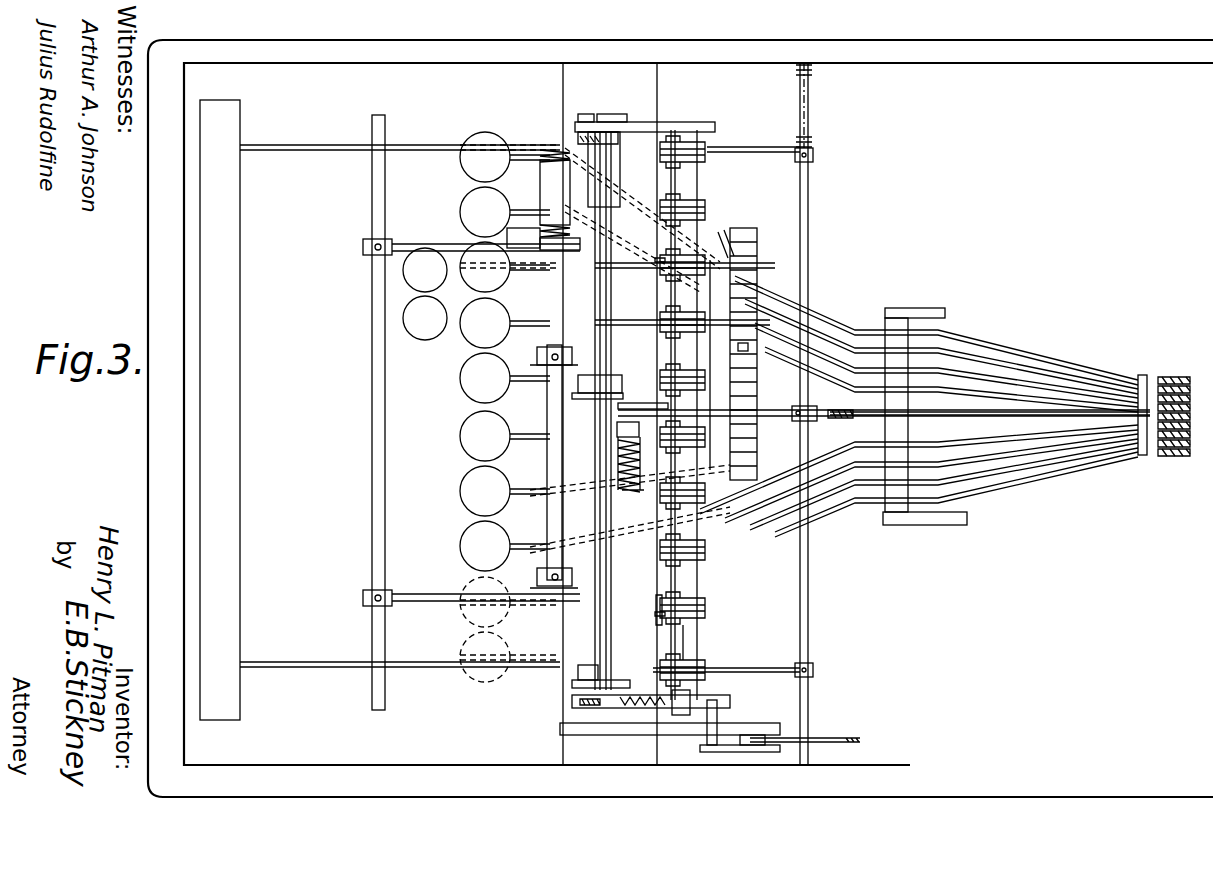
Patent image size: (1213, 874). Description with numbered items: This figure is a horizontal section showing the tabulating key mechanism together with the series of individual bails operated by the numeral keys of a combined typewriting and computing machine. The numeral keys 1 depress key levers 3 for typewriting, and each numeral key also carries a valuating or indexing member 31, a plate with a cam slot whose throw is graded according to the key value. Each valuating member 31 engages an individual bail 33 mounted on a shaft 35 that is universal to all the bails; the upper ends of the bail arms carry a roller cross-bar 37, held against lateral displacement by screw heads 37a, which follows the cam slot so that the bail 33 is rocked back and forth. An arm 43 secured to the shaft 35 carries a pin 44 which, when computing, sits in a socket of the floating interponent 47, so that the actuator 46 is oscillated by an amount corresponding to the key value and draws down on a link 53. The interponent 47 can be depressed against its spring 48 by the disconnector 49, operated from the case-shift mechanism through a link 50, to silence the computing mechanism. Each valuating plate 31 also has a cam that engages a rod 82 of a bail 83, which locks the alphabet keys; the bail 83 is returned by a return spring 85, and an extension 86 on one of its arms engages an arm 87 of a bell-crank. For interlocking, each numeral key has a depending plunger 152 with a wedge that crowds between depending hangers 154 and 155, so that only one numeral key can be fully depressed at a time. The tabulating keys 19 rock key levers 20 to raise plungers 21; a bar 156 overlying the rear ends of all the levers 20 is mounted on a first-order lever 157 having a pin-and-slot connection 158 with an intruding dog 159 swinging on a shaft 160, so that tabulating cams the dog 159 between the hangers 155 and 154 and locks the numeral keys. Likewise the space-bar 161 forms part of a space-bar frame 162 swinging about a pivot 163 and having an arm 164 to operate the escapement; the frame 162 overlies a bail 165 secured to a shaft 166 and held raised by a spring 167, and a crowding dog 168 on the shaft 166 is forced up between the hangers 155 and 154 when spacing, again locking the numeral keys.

The numeral keys 1 is at (412, 305).
The key levers 3 is at (545, 263).
The tabulating keys 19 is at (470, 535).
The tabulating key levers 20 is at (1062, 455).
The plungers 21 is at (1190, 408).
The valuating or indexing member 31 is at (648, 325).
The individual bail 33 is at (658, 330).
The shaft 35 is at (688, 652).
The cross-bar 37 is at (676, 312).
The screw heads 37a is at (656, 610).
The arm 43 is at (690, 690).
The pin 44 is at (710, 745).
The actuator 46 is at (596, 710).
The floating interponent 47 is at (640, 700).
The spring 48 is at (642, 712).
The disconnector 49 is at (726, 753).
The link 50 is at (825, 742).
The link 53 is at (572, 703).
The rod 82 is at (602, 500).
The bail 83 is at (628, 124).
The return spring 85 is at (547, 426).
The extension 86 is at (596, 122).
The arm 87 is at (614, 122).
The depending plunger 152 is at (722, 255).
The depending hanger 154 is at (757, 252).
The depending hanger 155 is at (756, 266).
The bar 156 is at (1143, 456).
The lever 157 is at (1048, 420).
The pin-and-slot connection 158 is at (665, 404).
The intruding dog 159 is at (617, 412).
The shaft 160 is at (617, 430).
The space-bar 161 is at (228, 483).
The space-bar frame 162 is at (735, 153).
The pivot 163 is at (808, 614).
The arm 164 is at (835, 420).
The bail 165 is at (372, 400).
The shaft 166 is at (572, 396).
The spring 167 is at (530, 230).
The crowding dog 168 is at (748, 348).